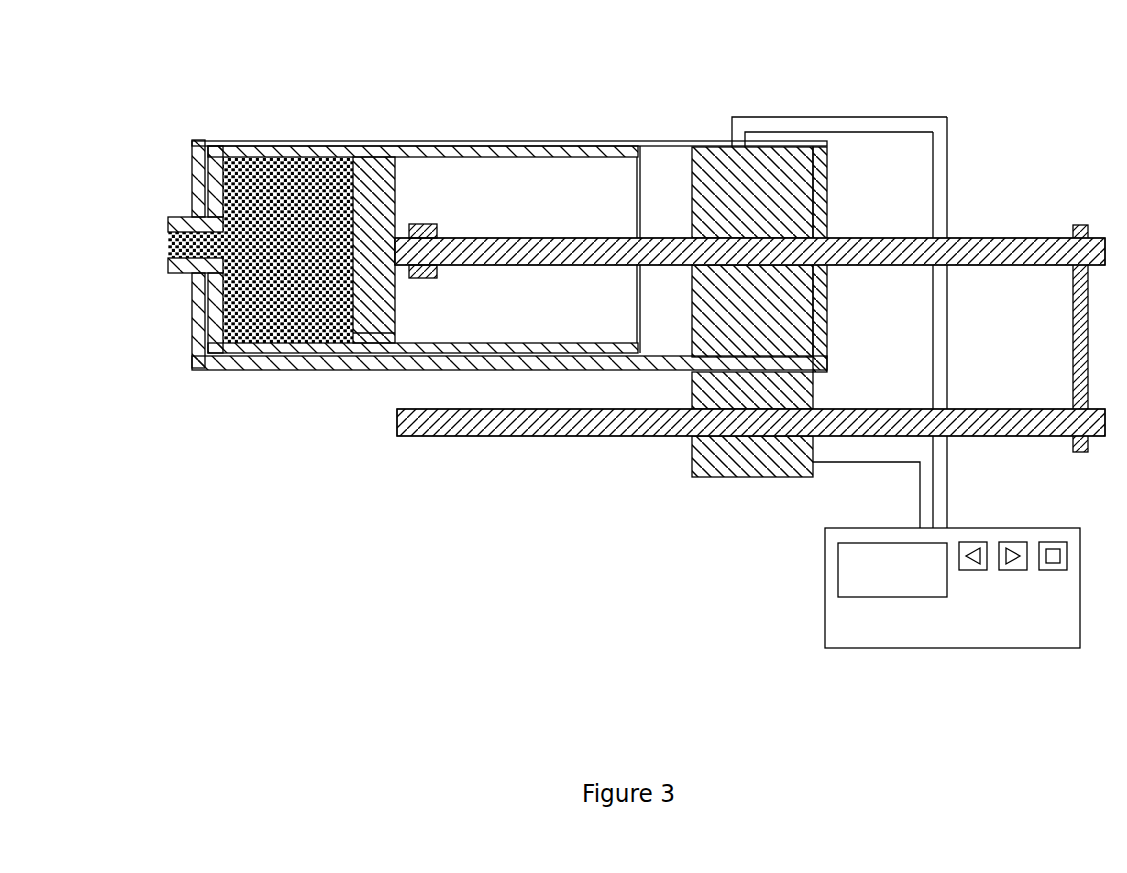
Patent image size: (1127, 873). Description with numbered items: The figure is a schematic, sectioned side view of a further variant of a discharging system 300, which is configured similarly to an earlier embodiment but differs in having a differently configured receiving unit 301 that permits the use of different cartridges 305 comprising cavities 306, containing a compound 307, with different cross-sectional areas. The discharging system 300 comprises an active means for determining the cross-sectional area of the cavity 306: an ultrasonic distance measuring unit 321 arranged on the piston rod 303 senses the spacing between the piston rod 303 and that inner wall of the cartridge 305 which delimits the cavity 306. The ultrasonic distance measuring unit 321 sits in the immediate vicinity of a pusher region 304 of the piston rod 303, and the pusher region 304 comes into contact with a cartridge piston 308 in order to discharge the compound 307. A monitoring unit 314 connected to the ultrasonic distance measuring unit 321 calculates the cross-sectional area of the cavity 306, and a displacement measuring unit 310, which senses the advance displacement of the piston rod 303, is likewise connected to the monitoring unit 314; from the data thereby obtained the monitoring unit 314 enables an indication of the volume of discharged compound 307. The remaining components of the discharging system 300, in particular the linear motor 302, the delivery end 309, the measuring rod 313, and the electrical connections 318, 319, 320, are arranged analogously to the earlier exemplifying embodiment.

The discharging system 300 is at (148, 76).
The receiving unit 301 is at (191, 196).
The linear motor 302 is at (750, 187).
The piston rod 303 is at (632, 245).
The pusher region 304 is at (393, 238).
The cartridge 305 is at (258, 347).
The cavity 306 is at (437, 318).
The compound 307 is at (243, 273).
The cartridge piston 308 is at (362, 333).
The delivery end 309 is at (137, 280).
The displacement measuring unit 310 is at (748, 465).
The measuring rod 313 is at (602, 422).
The monitoring unit 314 is at (913, 643).
The electrical connection 318 is at (853, 130).
The electrical connection 319 is at (827, 463).
The electrical connection 320 is at (948, 172).
The ultrasonic distance measuring unit 321 is at (420, 227).